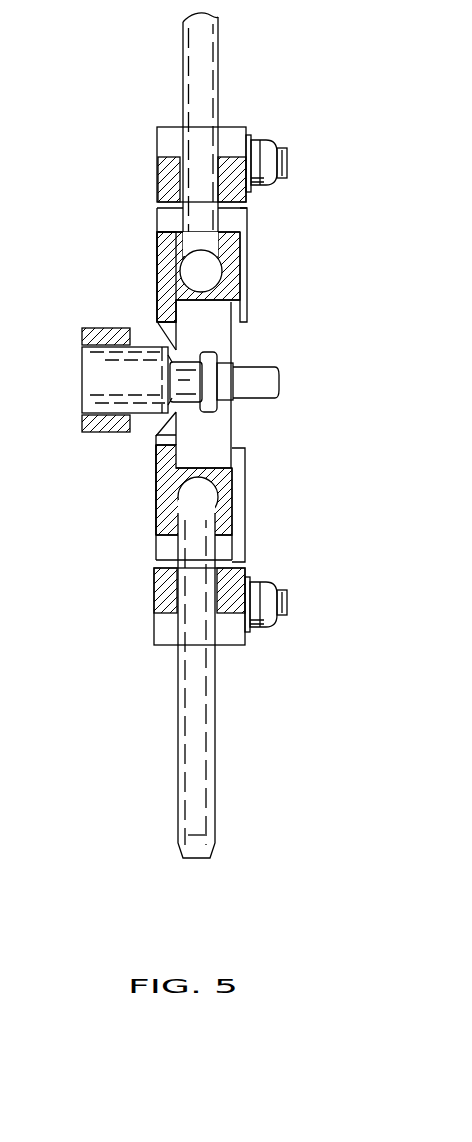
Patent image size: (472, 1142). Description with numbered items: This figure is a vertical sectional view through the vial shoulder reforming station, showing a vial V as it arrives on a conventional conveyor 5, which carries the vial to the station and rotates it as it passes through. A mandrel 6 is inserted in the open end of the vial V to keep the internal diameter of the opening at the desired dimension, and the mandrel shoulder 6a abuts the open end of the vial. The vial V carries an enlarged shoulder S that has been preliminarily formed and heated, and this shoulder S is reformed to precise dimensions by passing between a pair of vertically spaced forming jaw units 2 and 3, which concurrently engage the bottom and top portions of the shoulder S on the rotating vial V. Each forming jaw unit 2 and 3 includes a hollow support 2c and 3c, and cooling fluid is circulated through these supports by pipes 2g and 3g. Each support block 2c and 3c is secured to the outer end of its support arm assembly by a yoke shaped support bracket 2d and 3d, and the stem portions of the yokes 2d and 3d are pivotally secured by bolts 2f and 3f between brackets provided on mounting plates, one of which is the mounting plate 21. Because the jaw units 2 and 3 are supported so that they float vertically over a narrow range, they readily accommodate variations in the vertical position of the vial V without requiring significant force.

The forming jaw unit 2 is at (245, 500).
The hollow support 2c is at (240, 480).
The yoke shaped support bracket 2d is at (246, 548).
The bolt 2f is at (287, 603).
The pipe 2g is at (212, 717).
The mounting plate 21 is at (154, 590).
The forming jaw unit 3 is at (245, 250).
The hollow support 3c is at (157, 270).
The yoke shaped support bracket 3d is at (246, 293).
The bolt 3f is at (287, 155).
The pipe 3g is at (218, 72).
The conveyor 5 is at (80, 327).
The mandrel 6 is at (275, 366).
The mandrel shoulder 6a is at (228, 352).
The shoulder S is at (183, 407).
The vial V is at (225, 415).